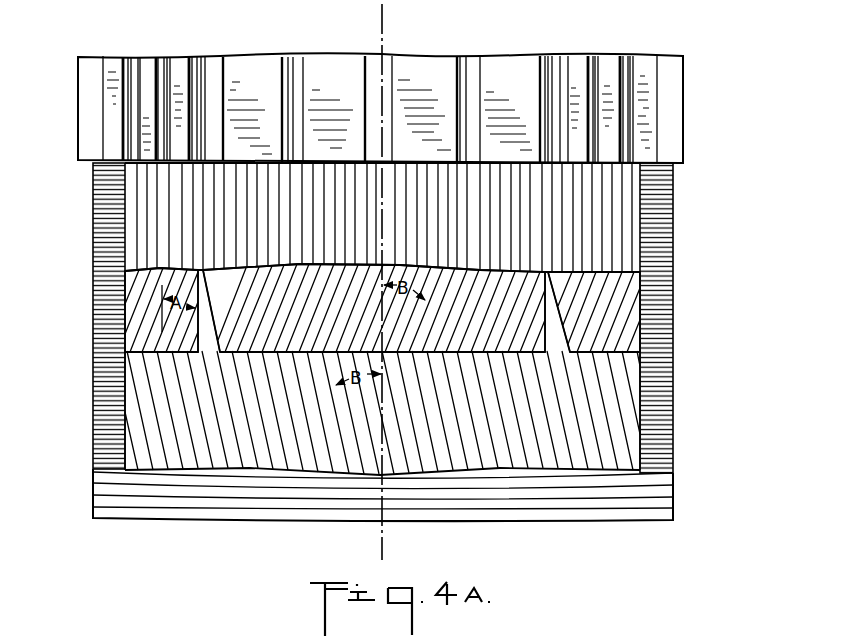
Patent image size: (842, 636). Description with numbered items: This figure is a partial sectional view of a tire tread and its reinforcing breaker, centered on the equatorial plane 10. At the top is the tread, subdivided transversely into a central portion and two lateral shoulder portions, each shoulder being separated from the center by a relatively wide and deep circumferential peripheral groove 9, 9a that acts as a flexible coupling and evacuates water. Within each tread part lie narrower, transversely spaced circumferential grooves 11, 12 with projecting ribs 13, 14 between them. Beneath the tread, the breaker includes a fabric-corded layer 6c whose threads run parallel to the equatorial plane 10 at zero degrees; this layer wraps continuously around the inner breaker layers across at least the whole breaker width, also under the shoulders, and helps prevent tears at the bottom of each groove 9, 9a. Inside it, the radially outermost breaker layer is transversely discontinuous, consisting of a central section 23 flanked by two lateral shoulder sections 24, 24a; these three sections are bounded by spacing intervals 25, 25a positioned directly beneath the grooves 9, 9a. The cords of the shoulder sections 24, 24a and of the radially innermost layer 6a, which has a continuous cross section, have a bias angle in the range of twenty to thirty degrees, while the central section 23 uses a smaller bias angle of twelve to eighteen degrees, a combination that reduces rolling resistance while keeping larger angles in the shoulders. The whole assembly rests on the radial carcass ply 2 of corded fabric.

The carcass ply 2 is at (103, 322).
The radially innermost layer 6a is at (143, 410).
The fabric-corded layer 6c is at (145, 224).
The circumferential peripheral groove 9 is at (212, 63).
The circumferential peripheral groove 9a is at (550, 63).
The equatorial plane 10 is at (382, 42).
The groove 11 is at (293, 63).
The groove 12 is at (133, 60).
The projecting rib 13 is at (253, 65).
The projecting rib 14 is at (115, 60).
The central section 23 is at (421, 333).
The lateral shoulder section 24 is at (142, 285).
The lateral shoulder section 24a is at (623, 285).
The spacing interval 25 is at (210, 279).
The spacing interval 25a is at (557, 347).